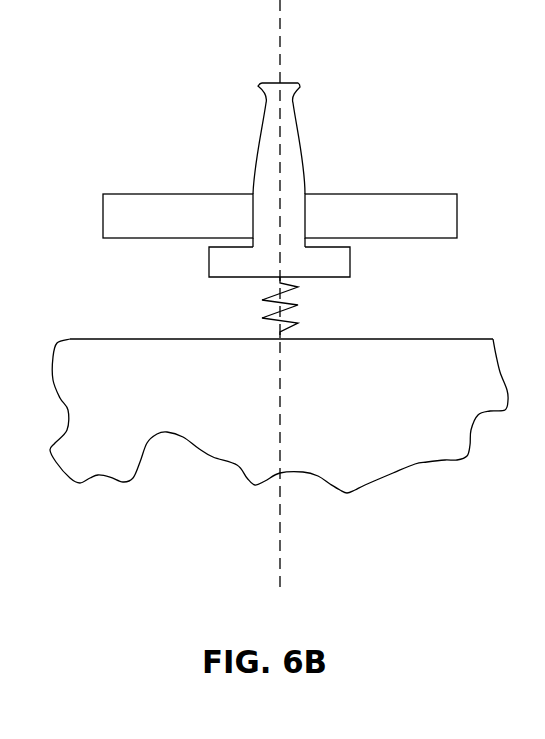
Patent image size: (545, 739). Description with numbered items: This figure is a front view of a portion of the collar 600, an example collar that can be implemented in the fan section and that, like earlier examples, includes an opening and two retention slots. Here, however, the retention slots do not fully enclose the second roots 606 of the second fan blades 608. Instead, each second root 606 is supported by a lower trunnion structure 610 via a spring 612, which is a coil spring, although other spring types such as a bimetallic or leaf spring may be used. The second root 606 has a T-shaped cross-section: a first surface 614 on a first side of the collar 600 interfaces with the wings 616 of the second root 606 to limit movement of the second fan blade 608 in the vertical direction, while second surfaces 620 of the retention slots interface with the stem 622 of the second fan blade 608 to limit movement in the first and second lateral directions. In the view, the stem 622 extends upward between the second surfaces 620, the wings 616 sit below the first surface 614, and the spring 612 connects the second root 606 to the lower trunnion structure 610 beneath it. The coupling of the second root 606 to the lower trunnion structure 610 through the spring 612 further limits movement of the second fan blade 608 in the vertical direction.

The collar 600 is at (88, 121).
The second root 606 is at (298, 278).
The second fan blade 608 is at (294, 84).
The lower trunnion structure 610 is at (447, 435).
The spring 612 is at (264, 318).
The first surface 614 is at (432, 240).
The wing 616 is at (208, 257).
The second surface 620 is at (250, 219).
The stem 622 is at (272, 213).